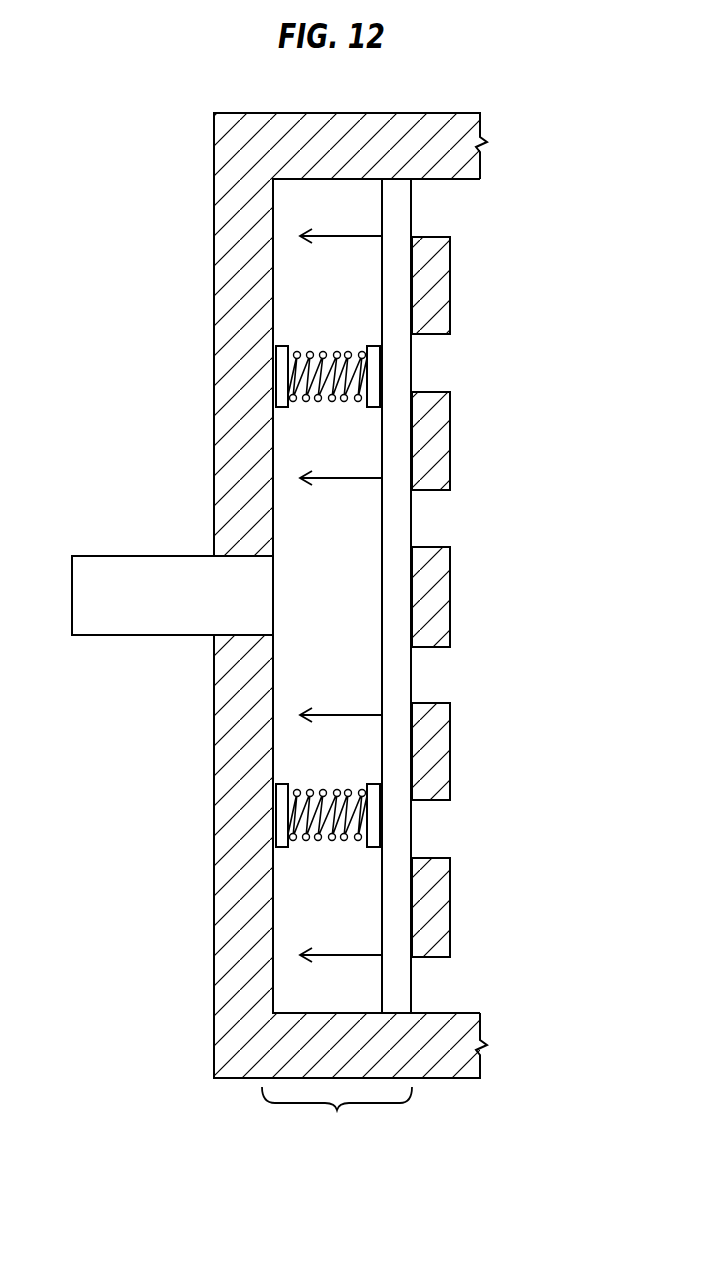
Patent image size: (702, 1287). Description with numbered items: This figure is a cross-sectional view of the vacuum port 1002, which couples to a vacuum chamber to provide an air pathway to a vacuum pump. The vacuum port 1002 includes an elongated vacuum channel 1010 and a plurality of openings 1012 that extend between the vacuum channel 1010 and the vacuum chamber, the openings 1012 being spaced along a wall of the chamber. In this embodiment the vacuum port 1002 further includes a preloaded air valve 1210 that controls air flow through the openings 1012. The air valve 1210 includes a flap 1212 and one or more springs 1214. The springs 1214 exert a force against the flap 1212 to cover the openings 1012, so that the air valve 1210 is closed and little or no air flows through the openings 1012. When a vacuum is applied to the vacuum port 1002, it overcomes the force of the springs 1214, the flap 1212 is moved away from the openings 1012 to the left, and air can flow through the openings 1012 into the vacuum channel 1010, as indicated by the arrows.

The vacuum port 1002 is at (157, 556).
The vacuum channel 1010 is at (308, 673).
The openings 1012 is at (456, 362).
The preloaded air valve 1210 is at (337, 1116).
The flap 1212 is at (382, 610).
The springs 1214 is at (317, 408).